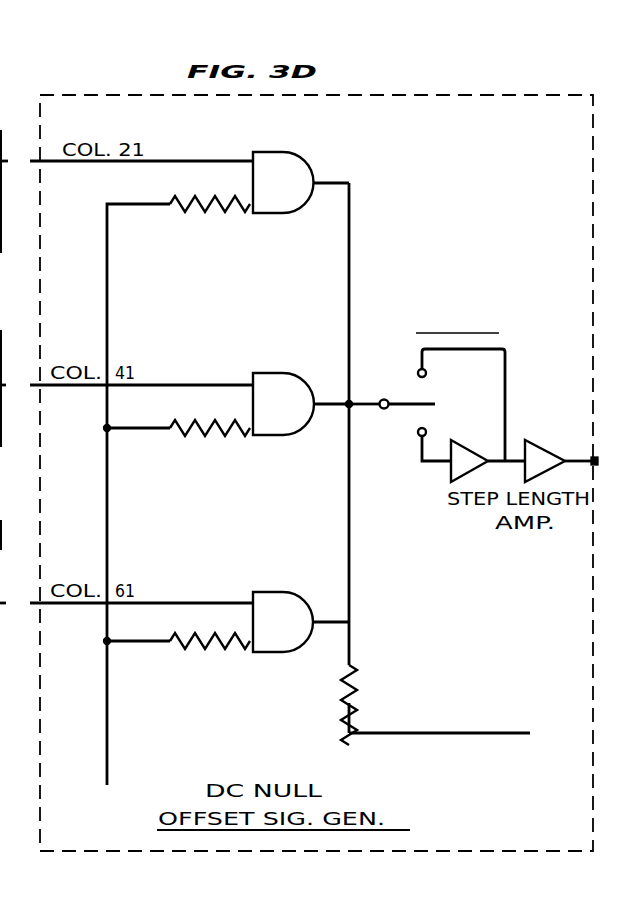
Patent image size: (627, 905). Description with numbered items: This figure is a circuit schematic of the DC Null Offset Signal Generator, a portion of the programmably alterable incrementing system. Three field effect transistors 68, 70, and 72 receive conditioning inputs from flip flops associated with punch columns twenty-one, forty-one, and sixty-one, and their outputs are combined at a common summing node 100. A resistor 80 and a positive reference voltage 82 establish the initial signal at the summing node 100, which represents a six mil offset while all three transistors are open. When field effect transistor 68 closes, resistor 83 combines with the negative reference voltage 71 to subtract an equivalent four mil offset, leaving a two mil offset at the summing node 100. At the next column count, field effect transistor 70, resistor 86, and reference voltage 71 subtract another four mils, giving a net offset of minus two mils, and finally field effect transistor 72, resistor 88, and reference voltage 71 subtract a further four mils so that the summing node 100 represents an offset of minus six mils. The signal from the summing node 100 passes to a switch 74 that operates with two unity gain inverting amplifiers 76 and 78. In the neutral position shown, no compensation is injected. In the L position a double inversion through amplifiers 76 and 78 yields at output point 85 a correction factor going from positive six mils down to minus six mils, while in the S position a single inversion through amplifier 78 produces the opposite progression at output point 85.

The field effect transistor 68 is at (270, 214).
The field effect transistor 70 is at (265, 436).
The field effect transistor 72 is at (280, 653).
The reference voltage 71 is at (103, 803).
The switch 74 is at (382, 409).
The unity gain inverting amplifier 76 is at (487, 441).
The unity gain inverting amplifier 78 is at (551, 455).
The resistor 80 is at (360, 690).
The positive reference voltage 82 is at (543, 722).
The resistor 83 is at (186, 208).
The output point 85 is at (594, 457).
The resistor 86 is at (186, 432).
The resistor 88 is at (186, 645).
The common summing node 100 is at (347, 401).